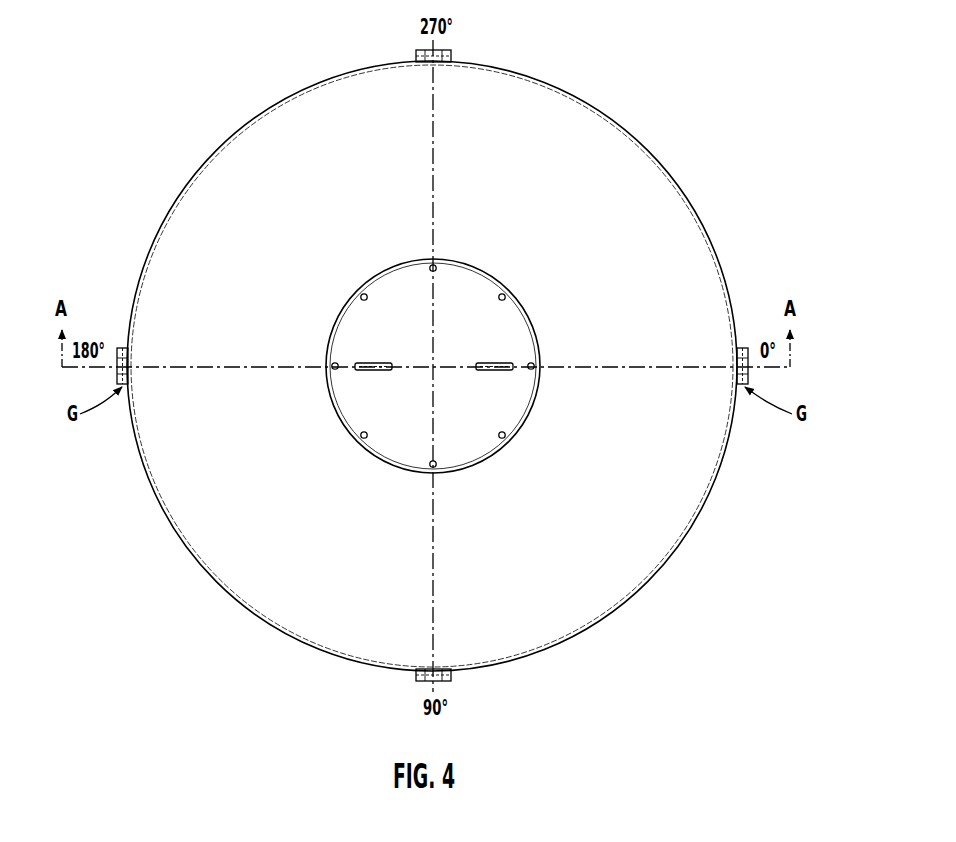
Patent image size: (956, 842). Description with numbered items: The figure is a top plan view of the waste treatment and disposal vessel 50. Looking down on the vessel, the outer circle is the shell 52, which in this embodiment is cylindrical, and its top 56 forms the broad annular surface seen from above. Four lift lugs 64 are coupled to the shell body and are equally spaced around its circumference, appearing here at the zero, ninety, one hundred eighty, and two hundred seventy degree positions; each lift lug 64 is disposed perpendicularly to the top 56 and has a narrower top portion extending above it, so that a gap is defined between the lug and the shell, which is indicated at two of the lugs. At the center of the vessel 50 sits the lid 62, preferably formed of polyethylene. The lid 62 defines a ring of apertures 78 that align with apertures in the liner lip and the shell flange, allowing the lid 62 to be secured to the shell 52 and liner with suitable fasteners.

The vessel 50 is at (178, 150).
The shell 52 is at (622, 126).
The top 56 is at (636, 171).
The lid 62 is at (514, 334).
The lift lug 64 is at (452, 52).
The aperture 78 is at (436, 266).